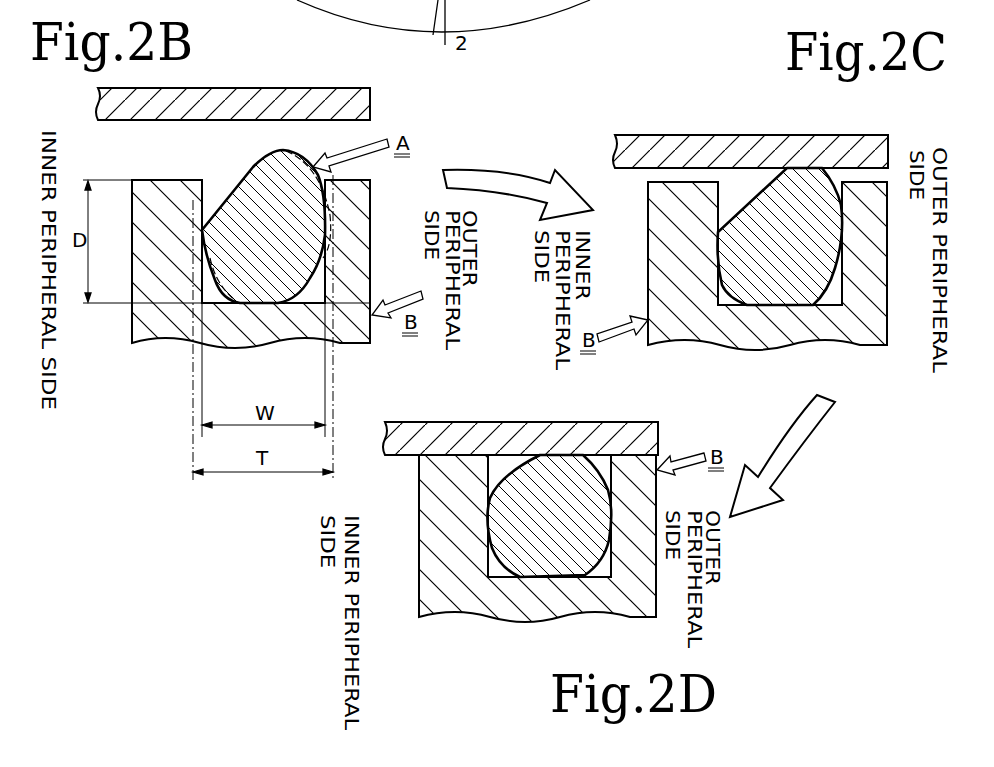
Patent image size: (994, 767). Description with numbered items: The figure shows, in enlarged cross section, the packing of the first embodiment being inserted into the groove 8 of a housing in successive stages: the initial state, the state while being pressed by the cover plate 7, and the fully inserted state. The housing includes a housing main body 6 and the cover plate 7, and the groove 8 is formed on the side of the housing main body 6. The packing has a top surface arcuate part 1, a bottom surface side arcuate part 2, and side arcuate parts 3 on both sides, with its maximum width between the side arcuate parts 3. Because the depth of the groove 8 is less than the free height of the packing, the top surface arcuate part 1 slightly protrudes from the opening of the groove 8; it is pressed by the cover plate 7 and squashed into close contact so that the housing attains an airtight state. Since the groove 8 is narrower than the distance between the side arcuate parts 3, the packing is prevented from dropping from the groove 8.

In FIG. 2B, the top surface arcuate part 1 is at (238, 178).
In FIG. 2C, the top surface arcuate part 1 is at (806, 176).
In FIG. 2D, the top surface arcuate part 1 is at (565, 458).
In FIG. 2B, the bottom surface side arcuate part 2 is at (252, 295).
In FIG. 2C, the bottom surface side arcuate part 2 is at (803, 295).
In FIG. 2D, the bottom surface side arcuate part 2 is at (570, 575).
In FIG. 2B, the side arcuate parts 3 is at (202, 232).
In FIG. 2C, the side arcuate parts 3 is at (722, 241).
In FIG. 2D, the side arcuate parts 3 is at (490, 522).
In FIG. 2B, the housing main body 6 is at (372, 188).
In FIG. 2C, the housing main body 6 is at (648, 285).
In FIG. 2D, the housing main body 6 is at (420, 568).
In FIG. 2B, the cover plate 7 is at (313, 88).
In FIG. 2C, the cover plate 7 is at (697, 135).
In FIG. 2D, the cover plate 7 is at (450, 422).
In FIG. 2B, the groove 8 is at (197, 150).
In FIG. 2C, the groove 8 is at (718, 196).
In FIG. 2D, the groove 8 is at (488, 482).